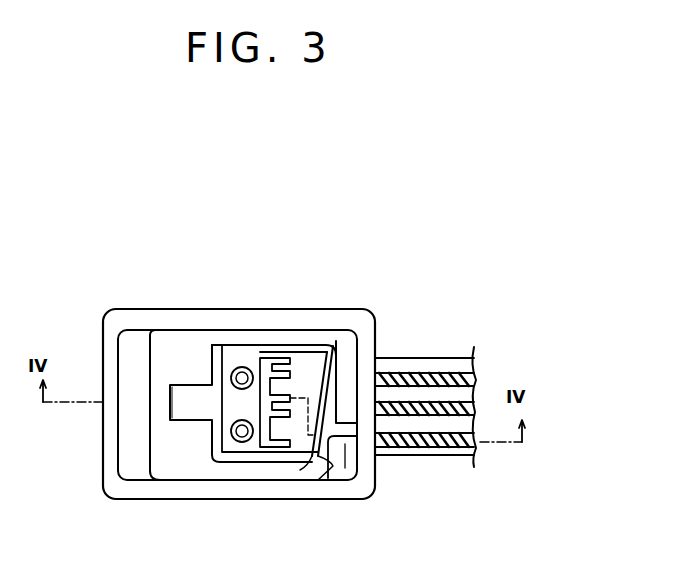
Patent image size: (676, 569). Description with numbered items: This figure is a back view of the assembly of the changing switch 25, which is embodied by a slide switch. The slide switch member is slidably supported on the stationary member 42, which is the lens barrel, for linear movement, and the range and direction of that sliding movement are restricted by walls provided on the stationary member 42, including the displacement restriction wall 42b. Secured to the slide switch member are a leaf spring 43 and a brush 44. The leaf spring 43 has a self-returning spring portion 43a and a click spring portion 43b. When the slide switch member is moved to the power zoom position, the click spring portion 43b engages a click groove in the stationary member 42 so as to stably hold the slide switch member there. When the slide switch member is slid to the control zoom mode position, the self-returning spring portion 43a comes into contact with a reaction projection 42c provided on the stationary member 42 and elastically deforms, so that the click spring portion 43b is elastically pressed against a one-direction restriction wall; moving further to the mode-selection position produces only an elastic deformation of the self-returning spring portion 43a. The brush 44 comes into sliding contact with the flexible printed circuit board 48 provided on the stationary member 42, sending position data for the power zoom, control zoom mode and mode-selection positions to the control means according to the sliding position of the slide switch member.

The changing switch 25 is at (110, 282).
The stationary member 42 is at (273, 323).
The displacement restriction wall 42b is at (362, 362).
The reaction projection 42c is at (345, 446).
The leaf spring 43 is at (228, 412).
The self-returning spring portion 43a is at (309, 463).
The click spring portion 43b is at (190, 407).
The brush 44 is at (280, 450).
The flexible printed circuit board 48 is at (435, 448).